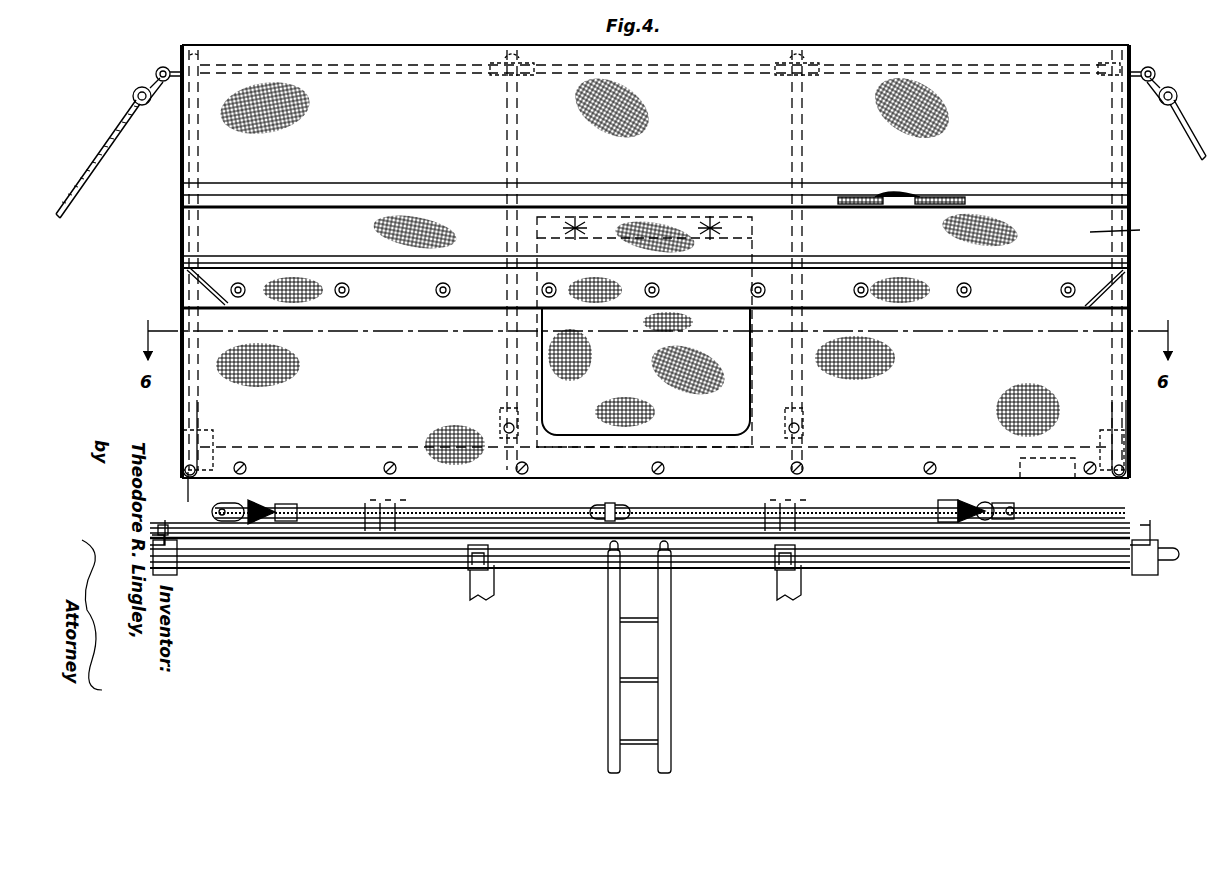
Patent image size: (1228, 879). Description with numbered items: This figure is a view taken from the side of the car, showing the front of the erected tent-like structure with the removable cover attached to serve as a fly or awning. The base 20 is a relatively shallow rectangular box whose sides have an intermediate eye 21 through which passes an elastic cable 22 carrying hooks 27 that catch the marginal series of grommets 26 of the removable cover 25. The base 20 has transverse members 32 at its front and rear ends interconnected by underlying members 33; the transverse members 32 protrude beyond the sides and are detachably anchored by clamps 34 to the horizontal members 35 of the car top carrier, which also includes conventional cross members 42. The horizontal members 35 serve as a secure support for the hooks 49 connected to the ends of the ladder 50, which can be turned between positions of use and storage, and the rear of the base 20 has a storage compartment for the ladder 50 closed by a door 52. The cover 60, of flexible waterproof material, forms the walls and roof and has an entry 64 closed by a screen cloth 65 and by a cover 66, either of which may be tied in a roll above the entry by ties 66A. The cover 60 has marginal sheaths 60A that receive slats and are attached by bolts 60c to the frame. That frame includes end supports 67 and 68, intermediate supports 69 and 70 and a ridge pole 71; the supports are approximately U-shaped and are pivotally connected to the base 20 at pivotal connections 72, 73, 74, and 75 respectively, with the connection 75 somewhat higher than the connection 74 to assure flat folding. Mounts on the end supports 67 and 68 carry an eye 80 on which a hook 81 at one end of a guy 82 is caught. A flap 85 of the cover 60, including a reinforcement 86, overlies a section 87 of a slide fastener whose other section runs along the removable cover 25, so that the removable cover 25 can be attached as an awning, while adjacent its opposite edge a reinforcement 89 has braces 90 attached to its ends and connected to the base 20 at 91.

The base 20 is at (663, 539).
The intermediate eye 21 is at (625, 505).
The elastic cable 22 is at (503, 508).
The cover 25 is at (1131, 228).
The grommets 26 is at (436, 290).
The hooks 27 is at (395, 503).
The transverse members 32 is at (170, 520).
The underlying members 33 is at (1078, 530).
The clamps 34 is at (172, 568).
The horizontal members 35 is at (926, 553).
The cross members 42 is at (462, 585).
The hooks 49 is at (664, 552).
The ladder 50 is at (672, 645).
The door 52 is at (1035, 480).
The cover 60 is at (897, 52).
The marginal sheaths 60A is at (288, 465).
The bolts 60c is at (828, 455).
The entry 64 is at (560, 393).
The screen cloth 65 is at (713, 403).
The cover 66 is at (630, 215).
The ties 66A is at (580, 218).
The end support 67 is at (200, 155).
The end support 68 is at (1112, 120).
The intermediate support 69 is at (520, 133).
The intermediate support 70 is at (792, 130).
The ridge pole 71 is at (440, 70).
The pivotal connection 72 is at (205, 420).
The pivotal connection 73 is at (1105, 425).
The pivotal connection 74 is at (500, 425).
The pivotal connection 75 is at (805, 425).
The eye 80 is at (163, 67).
The hook 81 is at (160, 100).
The guy 82 is at (90, 176).
The flap 85 is at (985, 197).
The reinforcement 86 is at (862, 197).
The slide fastener section 87 is at (900, 195).
The reinforcement 89 is at (490, 268).
The braces 90 is at (183, 315).
The connection 91 is at (180, 488).